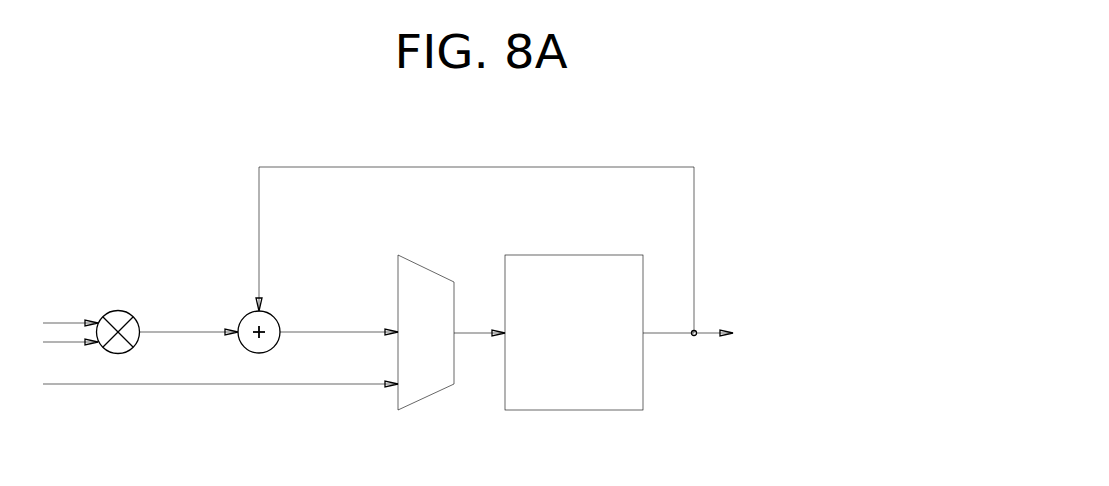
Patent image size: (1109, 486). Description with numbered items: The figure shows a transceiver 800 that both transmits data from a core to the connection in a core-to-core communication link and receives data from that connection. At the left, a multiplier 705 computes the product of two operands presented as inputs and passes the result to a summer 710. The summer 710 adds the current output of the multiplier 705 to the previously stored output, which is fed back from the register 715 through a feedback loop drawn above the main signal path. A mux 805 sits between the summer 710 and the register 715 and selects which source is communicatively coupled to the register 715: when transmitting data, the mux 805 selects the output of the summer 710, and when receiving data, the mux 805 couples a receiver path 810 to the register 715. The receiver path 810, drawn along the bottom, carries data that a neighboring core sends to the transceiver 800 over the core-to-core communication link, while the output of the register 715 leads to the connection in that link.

The transceiver 800 is at (227, 148).
The multiplier 705 is at (119, 310).
The summer 710 is at (278, 320).
The mux 805 is at (410, 366).
The register 715 is at (557, 365).
The receiver path 810 is at (190, 384).